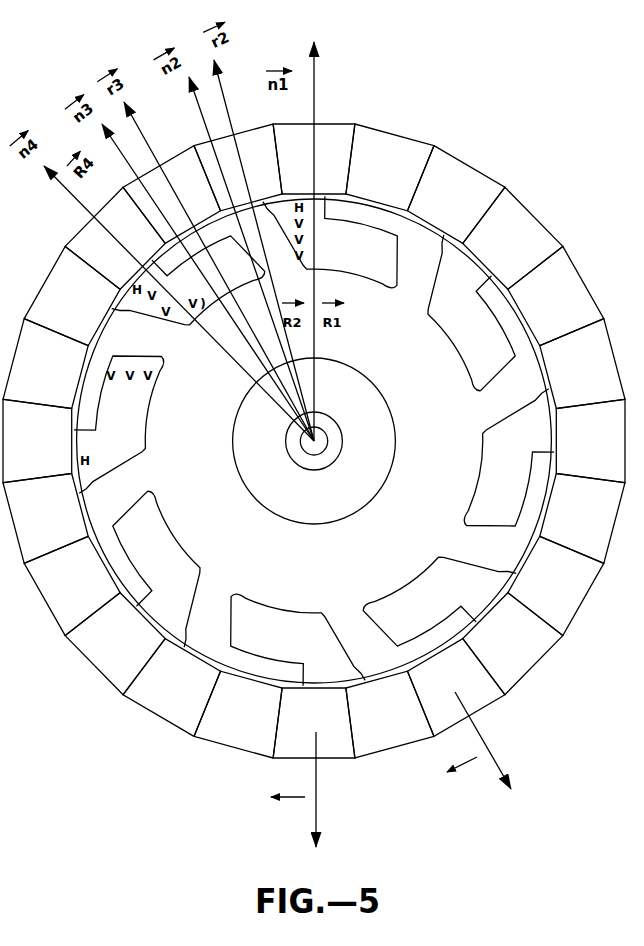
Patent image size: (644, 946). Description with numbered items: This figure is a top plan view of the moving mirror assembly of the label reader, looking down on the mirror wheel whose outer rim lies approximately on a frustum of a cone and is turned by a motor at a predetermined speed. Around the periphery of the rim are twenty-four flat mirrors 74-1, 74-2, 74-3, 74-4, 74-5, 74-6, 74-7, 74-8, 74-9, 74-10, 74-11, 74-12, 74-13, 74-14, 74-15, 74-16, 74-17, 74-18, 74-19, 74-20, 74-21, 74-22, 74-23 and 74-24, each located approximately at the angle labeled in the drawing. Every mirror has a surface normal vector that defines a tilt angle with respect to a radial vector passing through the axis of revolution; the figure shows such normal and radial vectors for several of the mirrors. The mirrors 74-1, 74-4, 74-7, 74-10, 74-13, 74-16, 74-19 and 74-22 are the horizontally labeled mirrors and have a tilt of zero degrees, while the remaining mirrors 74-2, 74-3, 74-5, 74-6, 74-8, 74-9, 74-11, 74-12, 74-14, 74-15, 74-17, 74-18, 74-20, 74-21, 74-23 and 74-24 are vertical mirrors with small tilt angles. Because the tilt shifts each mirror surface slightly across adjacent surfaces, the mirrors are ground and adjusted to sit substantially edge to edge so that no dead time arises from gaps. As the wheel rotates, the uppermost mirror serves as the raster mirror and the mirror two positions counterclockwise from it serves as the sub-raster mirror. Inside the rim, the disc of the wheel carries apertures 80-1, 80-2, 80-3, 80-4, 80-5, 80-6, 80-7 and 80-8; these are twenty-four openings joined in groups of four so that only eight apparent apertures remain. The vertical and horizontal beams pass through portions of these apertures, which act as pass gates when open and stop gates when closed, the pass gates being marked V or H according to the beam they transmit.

The flat mirror 74-1 is at (314, 159).
The flat mirror 74-2 is at (238, 167).
The flat mirror 74-3 is at (171, 195).
The flat mirror 74-4 is at (115, 238).
The flat mirror 74-5 is at (72, 295).
The flat mirror 74-6 is at (45, 364).
The flat mirror 74-7 is at (37, 440).
The flat mirror 74-8 is at (45, 519).
The flat mirror 74-9 is at (72, 585).
The flat mirror 74-10 is at (115, 644).
The flat mirror 74-11 is at (171, 688).
The flat mirror 74-12 is at (238, 714).
The flat mirror 74-13 is at (314, 723).
The flat mirror 74-14 is at (390, 714).
The flat mirror 74-15 is at (456, 688).
The flat mirror 74-16 is at (513, 644).
The flat mirror 74-17 is at (556, 585).
The flat mirror 74-18 is at (582, 519).
The flat mirror 74-19 is at (590, 440).
The flat mirror 74-20 is at (582, 364).
The flat mirror 74-21 is at (556, 295).
The flat mirror 74-22 is at (513, 238).
The flat mirror 74-23 is at (456, 195).
The flat mirror 74-24 is at (390, 167).
The aperture 80-1 is at (368, 283).
The aperture 80-2 is at (207, 305).
The aperture 80-3 is at (133, 428).
The aperture 80-4 is at (157, 541).
The aperture 80-5 is at (268, 618).
The aperture 80-6 is at (427, 590).
The aperture 80-7 is at (486, 495).
The aperture 80-8 is at (478, 371).